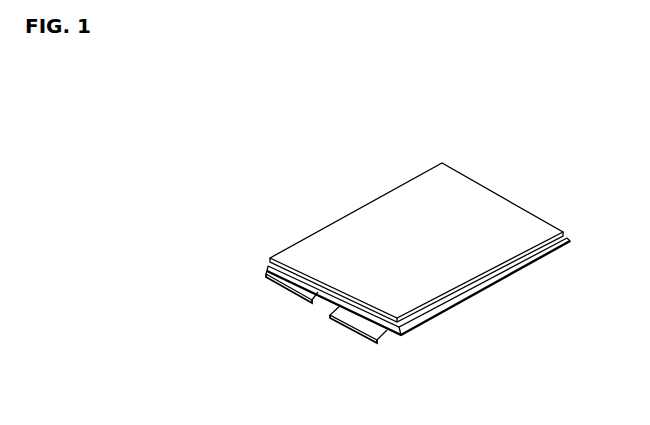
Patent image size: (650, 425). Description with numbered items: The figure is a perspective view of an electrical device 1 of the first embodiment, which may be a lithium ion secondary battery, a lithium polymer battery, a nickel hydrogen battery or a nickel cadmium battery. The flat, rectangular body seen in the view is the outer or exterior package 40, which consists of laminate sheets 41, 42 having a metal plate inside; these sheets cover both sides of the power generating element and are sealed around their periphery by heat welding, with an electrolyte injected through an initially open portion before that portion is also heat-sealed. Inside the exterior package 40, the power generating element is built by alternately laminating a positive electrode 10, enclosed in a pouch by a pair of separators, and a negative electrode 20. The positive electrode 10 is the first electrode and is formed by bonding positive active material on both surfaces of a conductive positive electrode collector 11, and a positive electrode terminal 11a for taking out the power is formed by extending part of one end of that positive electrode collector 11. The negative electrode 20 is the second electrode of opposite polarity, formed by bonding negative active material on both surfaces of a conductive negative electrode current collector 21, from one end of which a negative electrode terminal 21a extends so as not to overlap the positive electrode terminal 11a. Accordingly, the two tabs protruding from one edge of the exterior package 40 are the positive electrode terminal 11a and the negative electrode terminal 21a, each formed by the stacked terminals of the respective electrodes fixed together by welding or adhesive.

The electrical device 1 is at (394, 273).
The positive electrode 10 is at (215, 326).
The positive electrode collector 11 is at (265, 273).
The positive electrode terminal 11a is at (290, 291).
The negative electrode 20 is at (282, 364).
The negative electrode current collector 21 is at (333, 314).
The negative electrode terminal 21a is at (353, 331).
The exterior package 40 is at (595, 197).
The laminate sheet 41 is at (548, 213).
The laminate sheet 42 is at (548, 253).